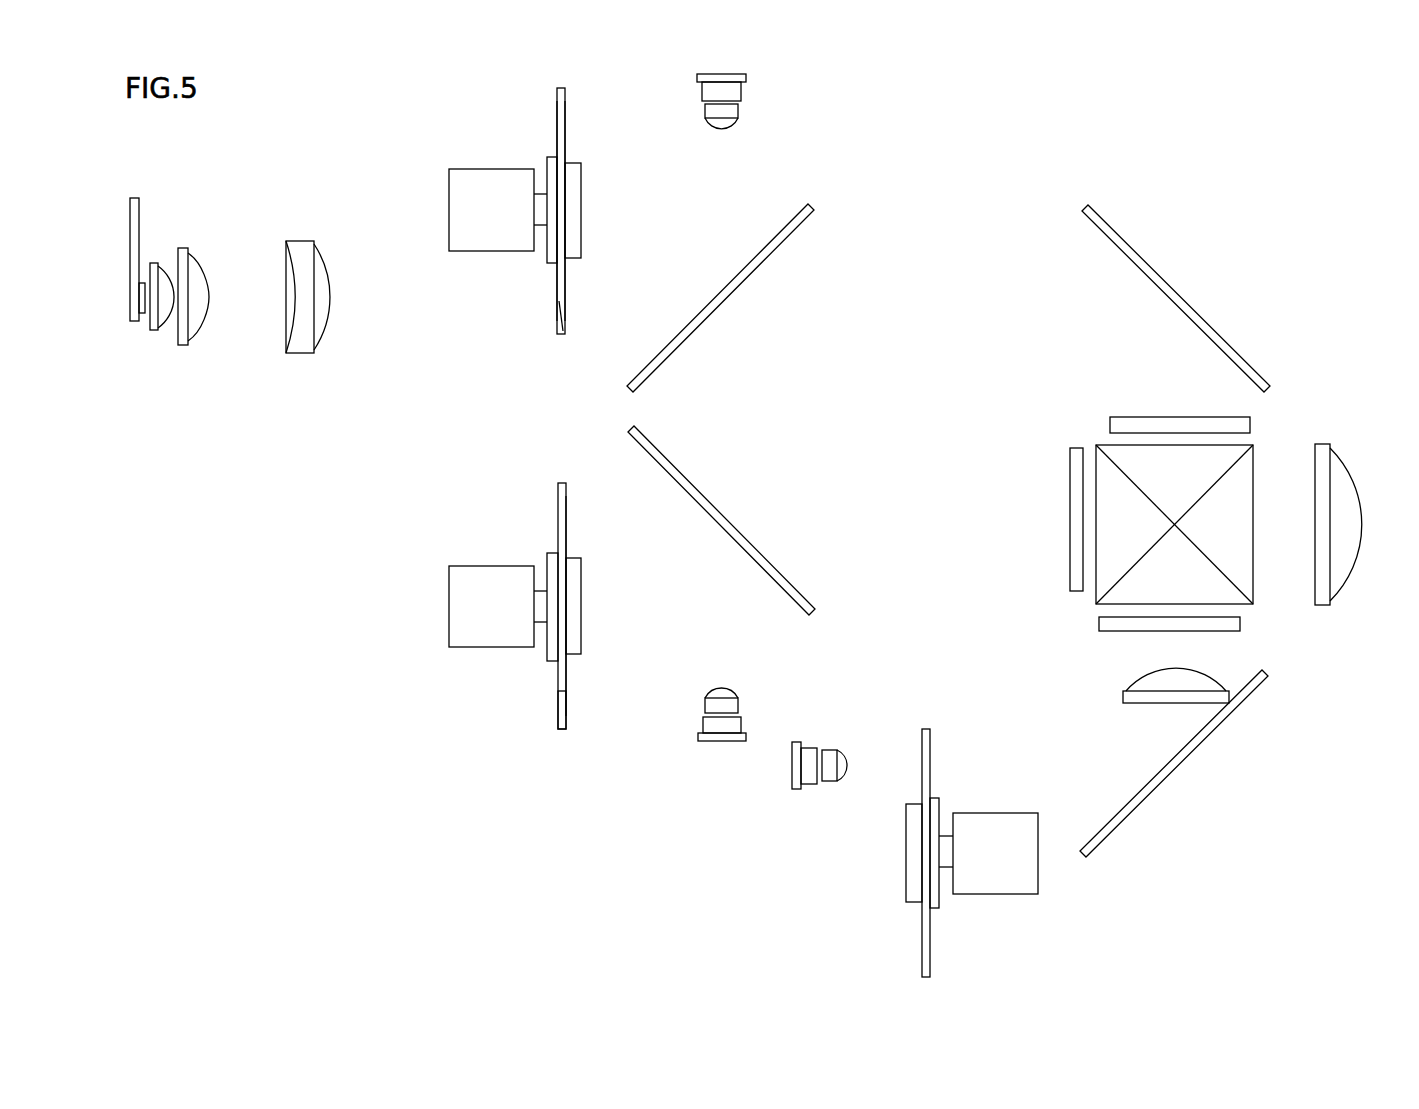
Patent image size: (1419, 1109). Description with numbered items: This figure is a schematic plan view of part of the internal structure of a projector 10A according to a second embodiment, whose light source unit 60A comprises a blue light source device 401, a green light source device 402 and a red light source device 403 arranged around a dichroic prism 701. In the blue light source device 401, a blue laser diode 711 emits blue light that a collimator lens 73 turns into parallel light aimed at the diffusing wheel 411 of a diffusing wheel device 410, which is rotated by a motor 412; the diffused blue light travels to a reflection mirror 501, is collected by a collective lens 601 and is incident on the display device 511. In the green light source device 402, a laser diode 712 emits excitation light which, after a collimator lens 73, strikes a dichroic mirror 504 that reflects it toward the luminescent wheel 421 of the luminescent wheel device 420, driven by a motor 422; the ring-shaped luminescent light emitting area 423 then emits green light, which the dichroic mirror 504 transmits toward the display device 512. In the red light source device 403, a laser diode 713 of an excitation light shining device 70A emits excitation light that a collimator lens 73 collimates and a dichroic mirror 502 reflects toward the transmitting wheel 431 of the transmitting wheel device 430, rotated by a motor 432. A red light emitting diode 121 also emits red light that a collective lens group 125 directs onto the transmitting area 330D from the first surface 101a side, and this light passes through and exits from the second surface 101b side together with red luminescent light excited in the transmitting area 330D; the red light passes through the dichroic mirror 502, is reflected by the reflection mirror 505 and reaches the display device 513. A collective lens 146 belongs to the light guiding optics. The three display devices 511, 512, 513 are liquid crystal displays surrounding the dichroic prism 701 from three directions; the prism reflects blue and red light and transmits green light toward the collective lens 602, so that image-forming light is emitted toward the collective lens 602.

The projector 10A is at (1307, 235).
The light source unit 60A is at (1225, 190).
The excitation light shining device 70A is at (723, 96).
The collimator lens 73 is at (703, 110).
The red light emitting diode 121 is at (138, 312).
The collective lens group 125 is at (167, 345).
The collective lens 146 is at (297, 352).
The first surface 101a is at (545, 320).
The second surface 101b is at (572, 285).
The transmitting area 330D is at (563, 318).
The blue light source device 401 is at (780, 898).
The green light source device 402 is at (505, 743).
The red light source device 403 is at (735, 170).
The diffusing wheel device 410 is at (944, 822).
The diffusing wheel 411 is at (905, 723).
The motor 412 is at (1013, 893).
The luminescent wheel device 420 is at (512, 584).
The luminescent wheel 421 is at (555, 703).
The motor 422 is at (470, 565).
The luminescent light emitting area 423 is at (563, 493).
The transmitting wheel device 430 is at (508, 238).
The transmitting wheel 431 is at (554, 110).
The motor 432 is at (468, 250).
The reflection mirror 501 is at (1222, 722).
The dichroic mirror 502 is at (775, 250).
The dichroic mirror 504 is at (775, 568).
The reflection mirror 505 is at (1120, 235).
The display device 511 is at (1112, 632).
The display device 512 is at (1065, 481).
The display device 513 is at (1145, 416).
The collective lens 601 is at (1140, 702).
The collective lens 602 is at (1320, 441).
The dichroic prism 701 is at (1243, 603).
The blue laser diode 711 is at (793, 790).
The laser diode 712 is at (697, 735).
The laser diode 713 is at (696, 78).